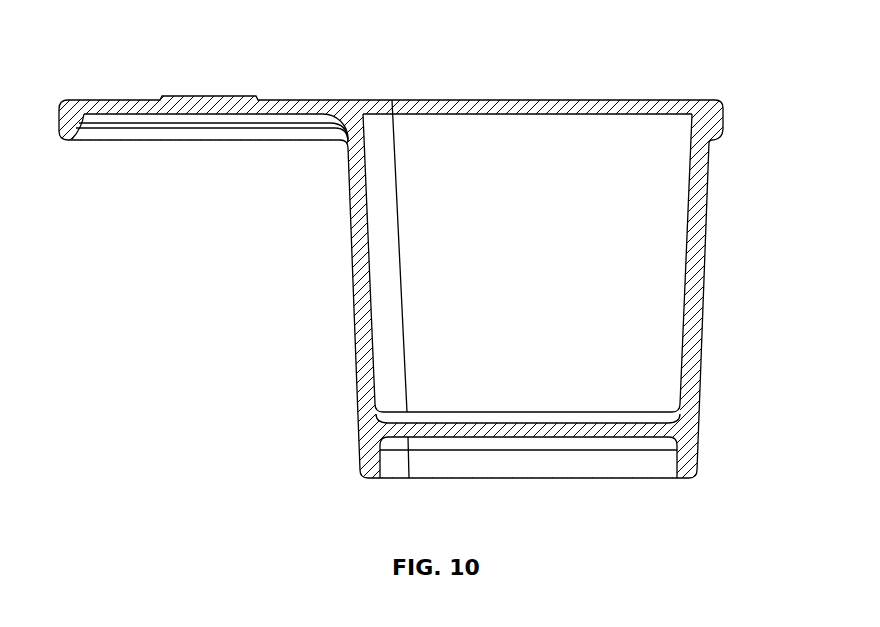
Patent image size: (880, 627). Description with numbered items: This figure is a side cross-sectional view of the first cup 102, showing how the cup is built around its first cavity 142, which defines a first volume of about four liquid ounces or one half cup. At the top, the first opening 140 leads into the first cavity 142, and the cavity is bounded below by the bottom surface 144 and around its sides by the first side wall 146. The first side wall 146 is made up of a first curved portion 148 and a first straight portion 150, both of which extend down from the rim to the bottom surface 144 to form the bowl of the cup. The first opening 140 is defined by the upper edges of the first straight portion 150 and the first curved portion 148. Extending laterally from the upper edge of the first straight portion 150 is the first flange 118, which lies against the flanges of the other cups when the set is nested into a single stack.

The first cup 102 is at (673, 35).
The first flange 118 is at (110, 103).
The first opening 140 is at (487, 100).
The first cavity 142 is at (629, 148).
The bottom surface 144 is at (566, 428).
The first side wall 146 is at (695, 285).
The first curved portion 148 is at (700, 192).
The first straight portion 150 is at (360, 218).